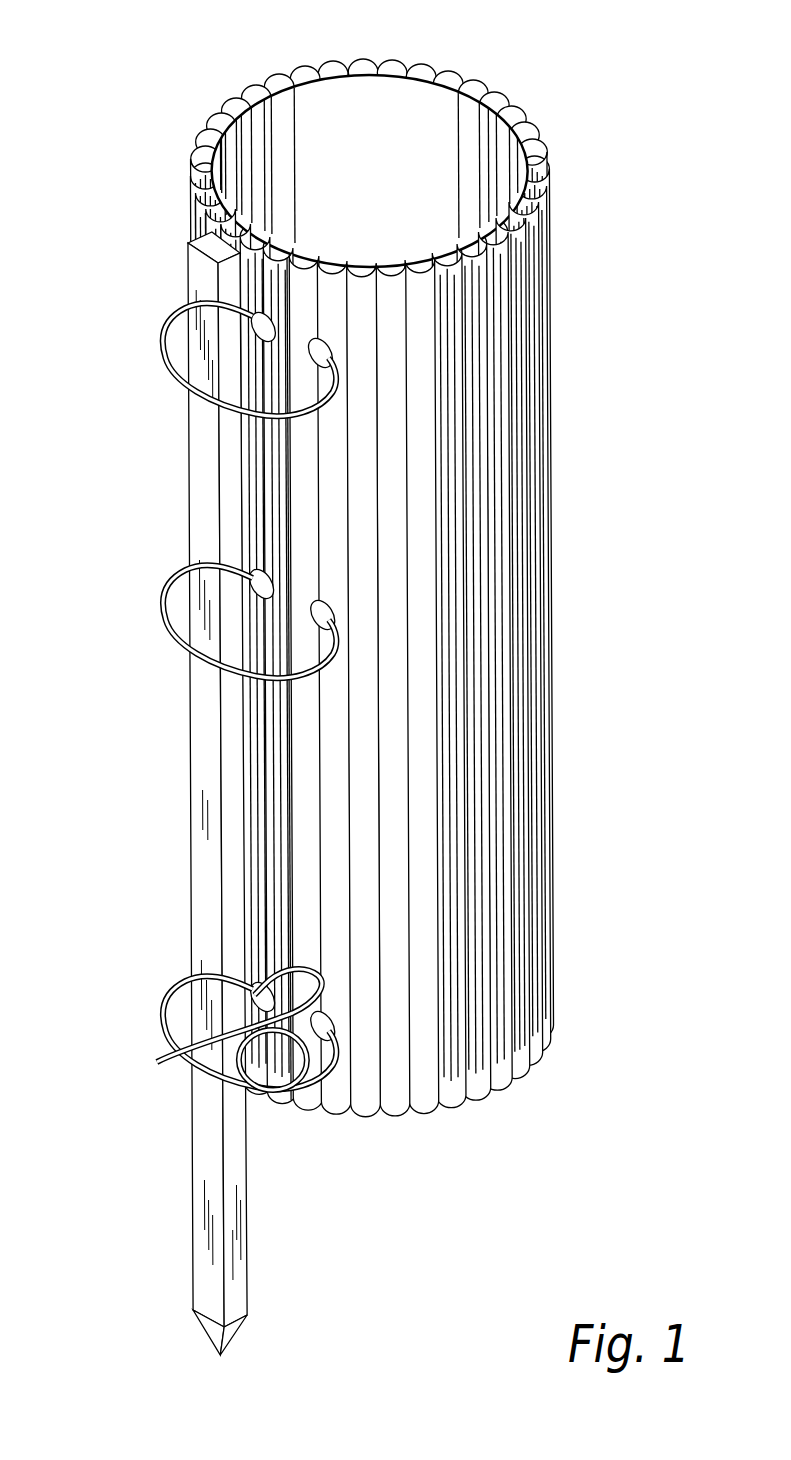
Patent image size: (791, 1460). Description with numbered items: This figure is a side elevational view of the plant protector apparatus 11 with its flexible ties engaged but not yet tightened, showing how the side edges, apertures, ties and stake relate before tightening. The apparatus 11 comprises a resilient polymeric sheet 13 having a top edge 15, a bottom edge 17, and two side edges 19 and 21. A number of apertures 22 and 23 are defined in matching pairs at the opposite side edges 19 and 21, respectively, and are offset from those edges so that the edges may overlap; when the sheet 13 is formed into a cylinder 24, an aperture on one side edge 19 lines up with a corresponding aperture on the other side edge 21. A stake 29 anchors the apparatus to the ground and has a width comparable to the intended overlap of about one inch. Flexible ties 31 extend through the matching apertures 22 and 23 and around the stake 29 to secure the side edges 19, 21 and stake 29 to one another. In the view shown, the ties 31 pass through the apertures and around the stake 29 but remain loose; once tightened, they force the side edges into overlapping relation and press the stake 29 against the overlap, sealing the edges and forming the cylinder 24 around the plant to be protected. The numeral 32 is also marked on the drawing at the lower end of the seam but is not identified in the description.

The plant protector apparatus 11 is at (387, 685).
The resilient polymeric sheet 13 is at (440, 608).
The top edge 15 is at (507, 100).
The bottom edge 17 is at (510, 1066).
The side edge 19 is at (290, 1093).
The side edge 21 is at (154, 1060).
The aperture 22 is at (252, 324).
The aperture 23 is at (328, 348).
The cylinder 24 is at (293, 234).
The stake 29 is at (188, 1148).
The flexible ties 31 is at (160, 597).
The seam at lower end 32 is at (288, 1132).